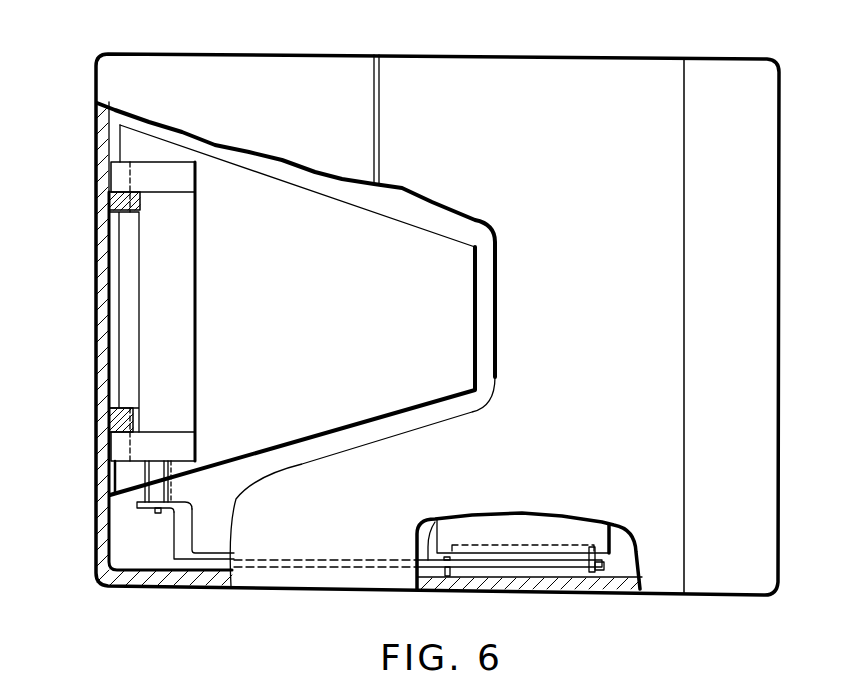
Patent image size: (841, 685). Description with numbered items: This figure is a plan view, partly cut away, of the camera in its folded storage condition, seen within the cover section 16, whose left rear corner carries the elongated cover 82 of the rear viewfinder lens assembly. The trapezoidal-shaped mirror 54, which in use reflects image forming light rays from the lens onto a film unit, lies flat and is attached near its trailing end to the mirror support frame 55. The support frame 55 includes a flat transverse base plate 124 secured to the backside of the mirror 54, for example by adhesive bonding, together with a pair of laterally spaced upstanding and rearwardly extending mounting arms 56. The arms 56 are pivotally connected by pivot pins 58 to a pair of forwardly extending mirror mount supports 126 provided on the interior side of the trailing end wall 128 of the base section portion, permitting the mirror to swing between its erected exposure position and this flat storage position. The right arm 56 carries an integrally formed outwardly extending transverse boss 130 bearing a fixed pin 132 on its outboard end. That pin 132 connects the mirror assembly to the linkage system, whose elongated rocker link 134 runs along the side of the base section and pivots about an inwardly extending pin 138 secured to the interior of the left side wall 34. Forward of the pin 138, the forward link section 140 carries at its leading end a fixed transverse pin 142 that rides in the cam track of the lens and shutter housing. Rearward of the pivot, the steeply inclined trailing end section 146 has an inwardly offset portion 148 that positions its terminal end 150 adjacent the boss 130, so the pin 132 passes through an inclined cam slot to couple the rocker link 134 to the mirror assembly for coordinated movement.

The cover section 16 is at (465, 77).
The cover 82 is at (279, 68).
The mirror 54 is at (415, 250).
The mirror support frame 55 is at (196, 313).
The mounting arms 56 is at (185, 167).
The pivot pins 58 is at (131, 173).
The base plate 124 is at (180, 260).
The mirror mount supports 126 is at (138, 195).
The trailing end wall 128 is at (93, 311).
The boss 130 is at (152, 490).
The pin 132 is at (157, 511).
The rocker link 134 is at (413, 542).
The pin 138 is at (450, 574).
The left side wall 34 is at (495, 580).
The forward link section 140 is at (537, 566).
The transverse pin 142 is at (600, 566).
The trailing end section 146 is at (212, 552).
The inwardly offset portion 148 is at (172, 534).
The terminal end 150 is at (183, 498).